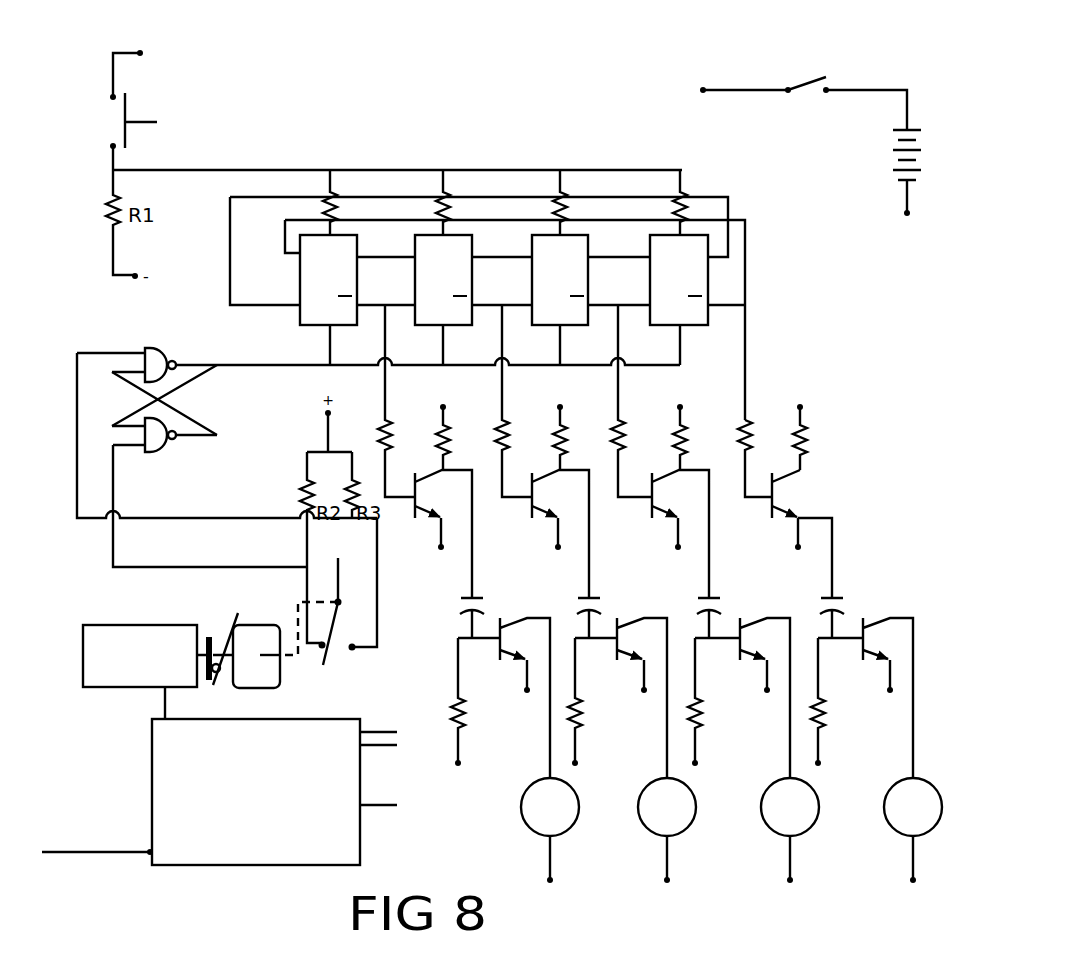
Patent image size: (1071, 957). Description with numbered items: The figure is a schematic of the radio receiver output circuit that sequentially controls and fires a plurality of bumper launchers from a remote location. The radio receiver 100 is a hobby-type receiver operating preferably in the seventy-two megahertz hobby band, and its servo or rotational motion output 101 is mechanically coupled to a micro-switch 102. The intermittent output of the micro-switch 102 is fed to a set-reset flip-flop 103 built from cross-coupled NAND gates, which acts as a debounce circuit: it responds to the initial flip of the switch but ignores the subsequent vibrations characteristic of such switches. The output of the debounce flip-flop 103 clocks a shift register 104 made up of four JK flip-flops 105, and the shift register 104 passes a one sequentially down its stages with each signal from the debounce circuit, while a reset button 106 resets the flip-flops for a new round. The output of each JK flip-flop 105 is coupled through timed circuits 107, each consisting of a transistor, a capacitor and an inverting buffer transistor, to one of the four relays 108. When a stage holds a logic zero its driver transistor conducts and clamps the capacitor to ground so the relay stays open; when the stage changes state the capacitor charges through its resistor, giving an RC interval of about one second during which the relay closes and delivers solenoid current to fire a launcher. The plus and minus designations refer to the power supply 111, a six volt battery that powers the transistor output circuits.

The radio receiver 100 is at (203, 865).
The servo output 101 is at (208, 637).
The micro-switch 102 is at (263, 625).
The set-reset flip-flop 103 is at (195, 404).
The shift register 104 is at (548, 308).
The JK flip-flop 105 is at (300, 291).
The reset button 106 is at (170, 94).
The timed circuits 107 is at (843, 492).
The relays 108 is at (508, 821).
The power supply 111 is at (908, 68).